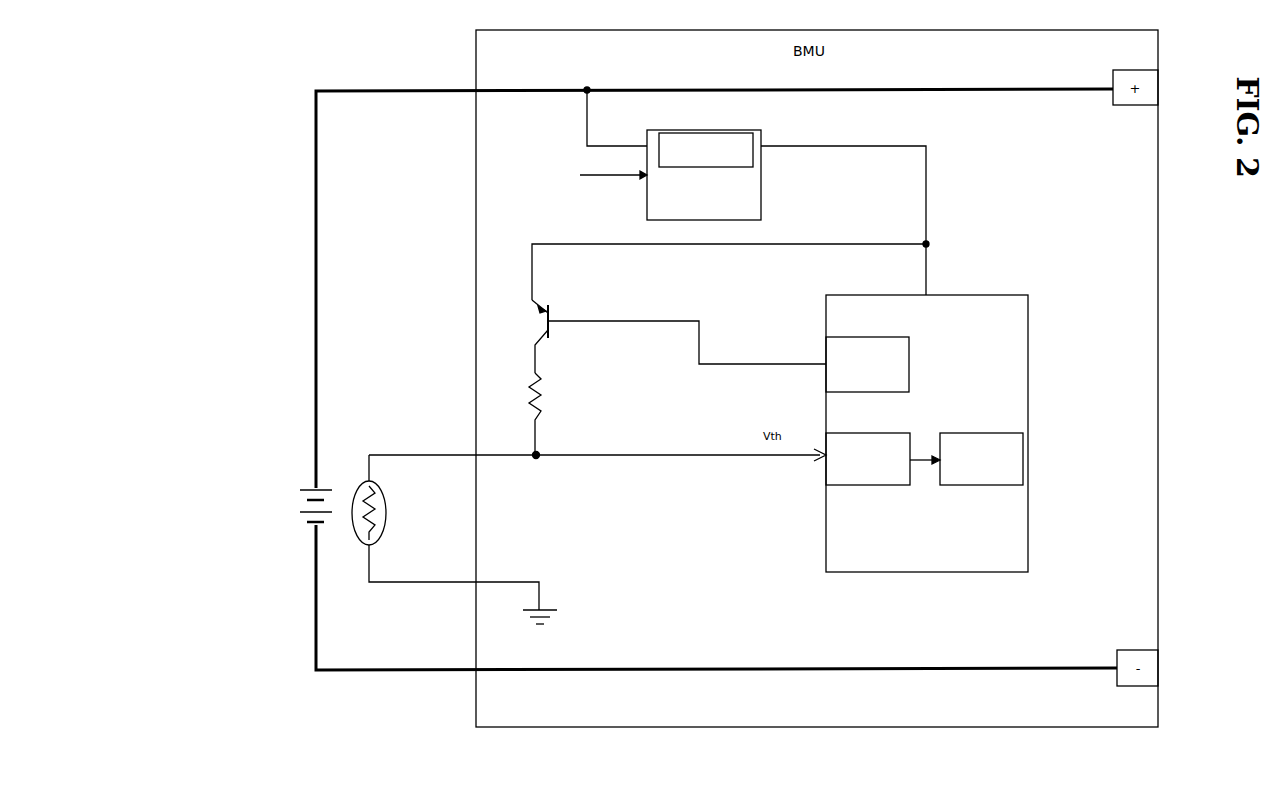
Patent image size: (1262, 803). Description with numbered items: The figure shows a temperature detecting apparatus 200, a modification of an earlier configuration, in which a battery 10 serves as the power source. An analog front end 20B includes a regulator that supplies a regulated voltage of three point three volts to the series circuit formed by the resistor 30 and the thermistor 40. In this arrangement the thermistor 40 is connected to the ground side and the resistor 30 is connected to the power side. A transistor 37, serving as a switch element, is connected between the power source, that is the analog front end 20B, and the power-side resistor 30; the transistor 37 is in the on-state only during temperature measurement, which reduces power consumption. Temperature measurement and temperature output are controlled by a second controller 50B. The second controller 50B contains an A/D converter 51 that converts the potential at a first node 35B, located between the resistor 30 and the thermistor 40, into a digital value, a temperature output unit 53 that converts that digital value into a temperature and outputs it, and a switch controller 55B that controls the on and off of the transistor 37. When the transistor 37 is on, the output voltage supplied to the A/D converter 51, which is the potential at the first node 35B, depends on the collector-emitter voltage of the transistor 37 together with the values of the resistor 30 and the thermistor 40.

The temperature detecting apparatus 200 is at (420, 70).
The battery 10 is at (298, 514).
The analog front end 20B is at (690, 130).
The resistor 30 is at (530, 378).
The first node 35B is at (536, 460).
The transistor 37 is at (543, 312).
The thermistor 40 is at (383, 497).
The second controller 50B is at (985, 295).
The A/D converter 51 is at (849, 486).
The temperature output unit 53 is at (987, 486).
The switch controller 55B is at (910, 376).